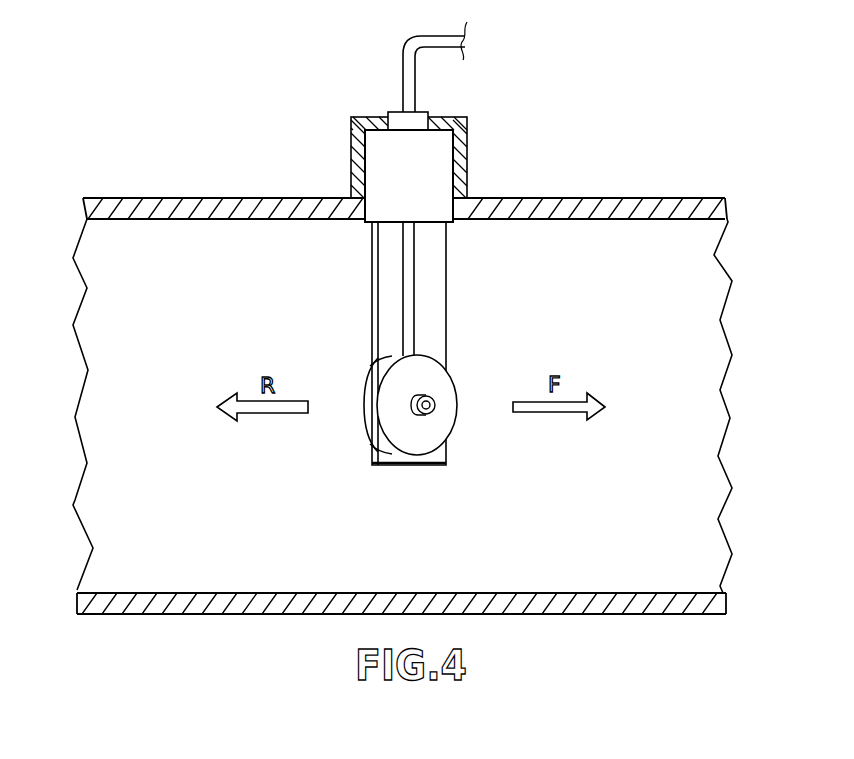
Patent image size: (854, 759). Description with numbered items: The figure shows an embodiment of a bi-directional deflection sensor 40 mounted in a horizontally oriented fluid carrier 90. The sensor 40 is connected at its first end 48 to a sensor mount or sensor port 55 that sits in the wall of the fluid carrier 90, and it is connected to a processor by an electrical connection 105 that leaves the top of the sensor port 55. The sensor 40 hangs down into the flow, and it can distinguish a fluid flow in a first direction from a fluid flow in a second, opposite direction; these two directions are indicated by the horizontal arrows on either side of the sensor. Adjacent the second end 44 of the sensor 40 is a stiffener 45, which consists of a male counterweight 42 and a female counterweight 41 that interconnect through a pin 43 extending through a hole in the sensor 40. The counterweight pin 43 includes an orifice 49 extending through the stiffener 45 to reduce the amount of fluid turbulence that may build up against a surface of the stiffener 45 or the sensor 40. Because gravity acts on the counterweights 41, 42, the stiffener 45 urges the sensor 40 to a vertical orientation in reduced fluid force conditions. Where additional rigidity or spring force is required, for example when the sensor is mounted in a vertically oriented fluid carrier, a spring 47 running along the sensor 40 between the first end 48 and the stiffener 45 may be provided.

The fluid carrier 90 is at (212, 198).
The sensor port 55 is at (467, 151).
The first end 48 is at (466, 231).
The electrical connection 105 is at (401, 73).
The bi-directional deflection sensor 40 is at (309, 308).
The spring 47 is at (415, 293).
The male counterweight 42 is at (366, 400).
The female counterweight 41 is at (415, 461).
The pin 43 is at (433, 412).
The orifice 49 is at (432, 401).
The second end 44 is at (474, 456).
The stiffener 45 is at (346, 427).